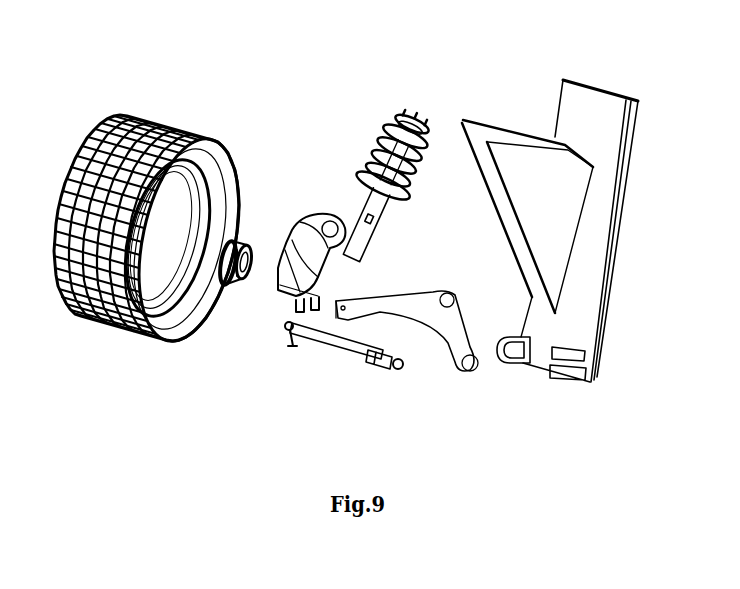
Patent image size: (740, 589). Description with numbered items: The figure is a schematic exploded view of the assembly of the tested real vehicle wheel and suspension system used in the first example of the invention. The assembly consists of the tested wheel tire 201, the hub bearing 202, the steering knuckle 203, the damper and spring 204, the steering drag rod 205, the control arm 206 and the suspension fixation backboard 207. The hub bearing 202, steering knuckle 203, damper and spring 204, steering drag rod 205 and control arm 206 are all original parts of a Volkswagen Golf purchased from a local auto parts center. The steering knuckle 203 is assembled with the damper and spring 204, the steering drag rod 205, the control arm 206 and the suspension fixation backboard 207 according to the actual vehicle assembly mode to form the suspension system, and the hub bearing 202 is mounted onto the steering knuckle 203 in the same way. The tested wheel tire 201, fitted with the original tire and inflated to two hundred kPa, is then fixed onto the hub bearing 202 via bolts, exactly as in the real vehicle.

The tested wheel tire 201 is at (157, 112).
The hub bearing 202 is at (252, 240).
The steering knuckle 203 is at (320, 223).
The damper and spring 204 is at (420, 120).
The steering drag rod 205 is at (345, 352).
The control arm 206 is at (447, 343).
The suspension fixation backboard 207 is at (593, 377).